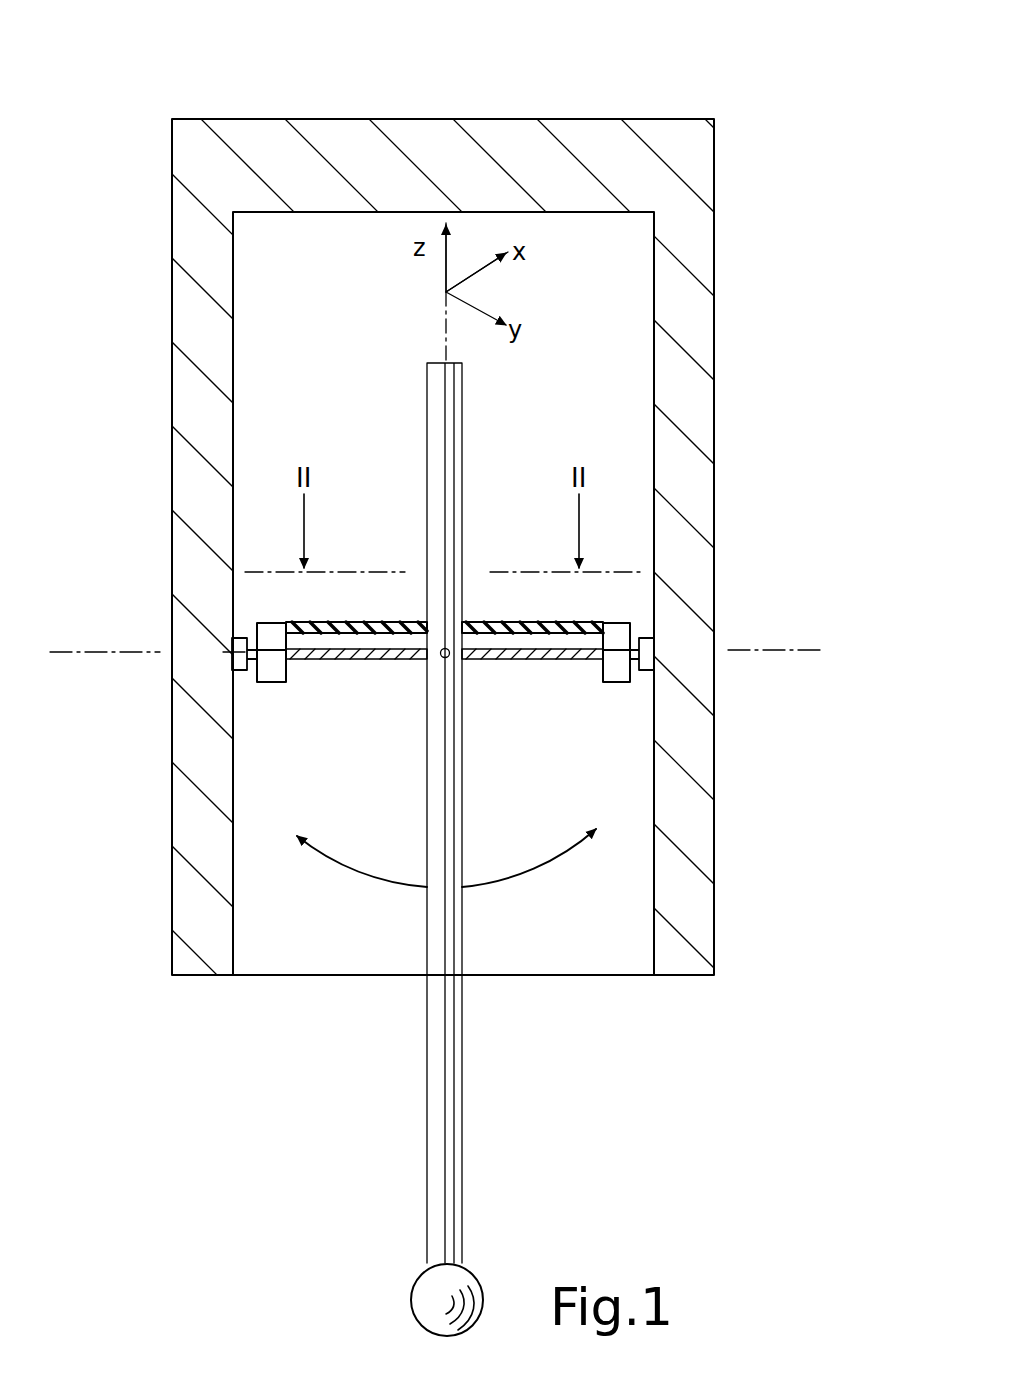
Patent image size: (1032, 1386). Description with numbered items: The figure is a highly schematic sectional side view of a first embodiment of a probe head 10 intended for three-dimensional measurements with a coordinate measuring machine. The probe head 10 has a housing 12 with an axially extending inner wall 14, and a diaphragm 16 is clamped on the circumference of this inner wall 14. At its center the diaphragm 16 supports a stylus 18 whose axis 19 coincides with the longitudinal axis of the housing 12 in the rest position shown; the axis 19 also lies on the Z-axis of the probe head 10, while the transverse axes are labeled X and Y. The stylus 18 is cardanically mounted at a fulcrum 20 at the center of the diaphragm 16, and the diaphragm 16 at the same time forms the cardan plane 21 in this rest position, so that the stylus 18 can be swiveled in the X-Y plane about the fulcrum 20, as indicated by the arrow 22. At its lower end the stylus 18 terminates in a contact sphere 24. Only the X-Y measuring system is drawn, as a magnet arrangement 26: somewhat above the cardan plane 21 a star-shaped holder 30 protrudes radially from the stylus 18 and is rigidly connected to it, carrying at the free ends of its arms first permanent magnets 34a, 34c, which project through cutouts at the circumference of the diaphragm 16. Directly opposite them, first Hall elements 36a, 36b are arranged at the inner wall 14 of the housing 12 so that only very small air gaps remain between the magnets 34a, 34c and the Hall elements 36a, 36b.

The probe head 10 is at (762, 151).
The housing 12 is at (690, 352).
The inner wall 14 is at (650, 782).
The diaphragm 16 is at (515, 659).
The stylus 18 is at (438, 739).
The axis 19 is at (446, 323).
The fulcrum 20 is at (441, 657).
The cardan plane 21 is at (800, 650).
The arrow 22 is at (537, 873).
The contact sphere 24 is at (426, 1298).
The magnet arrangement 26 is at (644, 612).
The star-shaped holder 30 is at (388, 620).
The first permanent magnet 34a is at (610, 684).
The first permanent magnet 34c is at (252, 684).
The first Hall element 36a is at (646, 652).
The first Hall element 36b is at (238, 650).